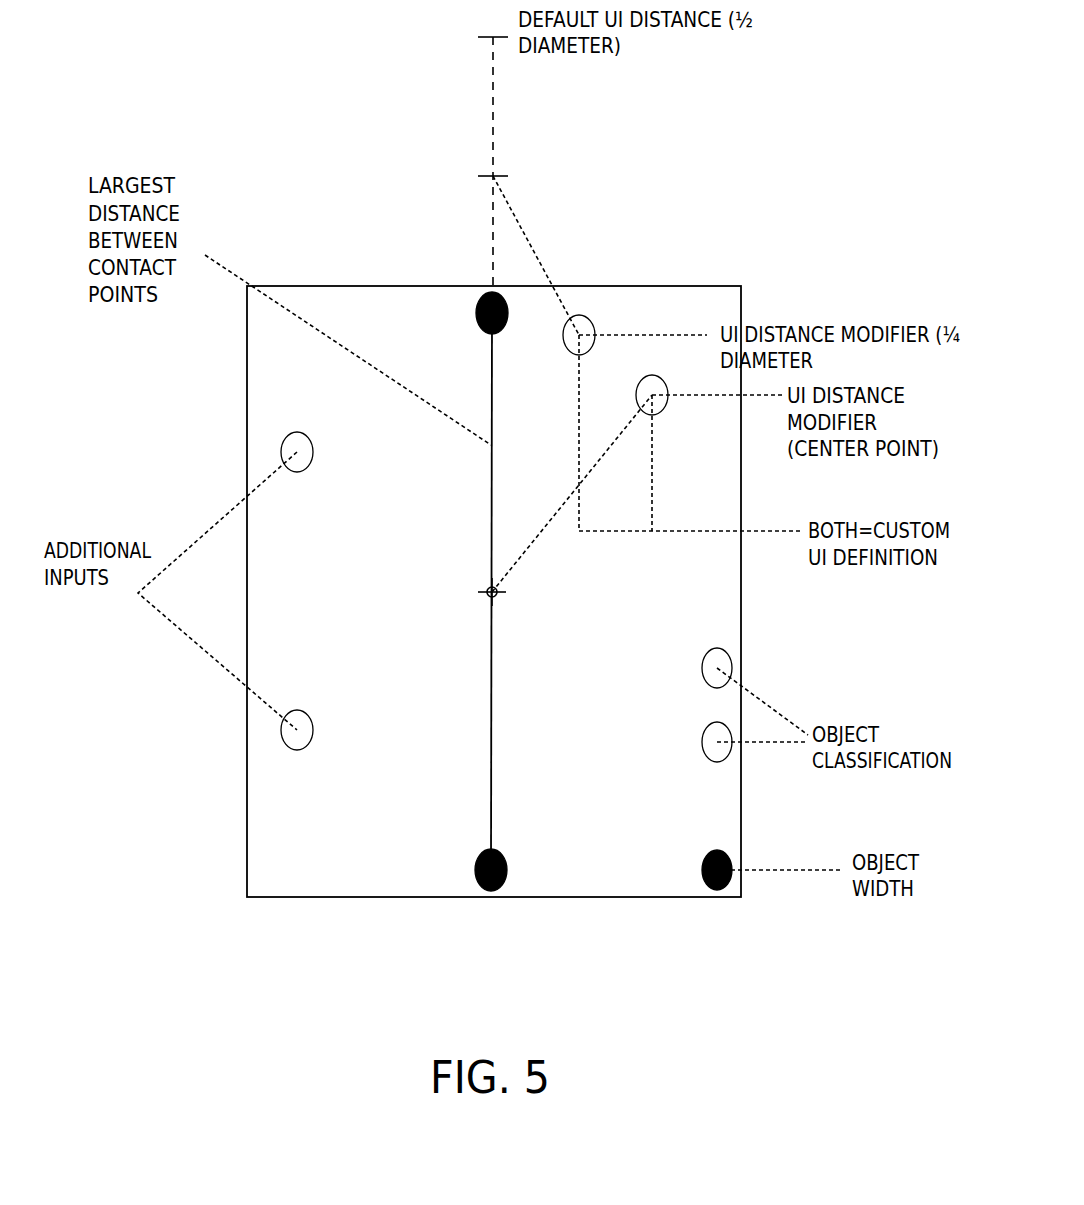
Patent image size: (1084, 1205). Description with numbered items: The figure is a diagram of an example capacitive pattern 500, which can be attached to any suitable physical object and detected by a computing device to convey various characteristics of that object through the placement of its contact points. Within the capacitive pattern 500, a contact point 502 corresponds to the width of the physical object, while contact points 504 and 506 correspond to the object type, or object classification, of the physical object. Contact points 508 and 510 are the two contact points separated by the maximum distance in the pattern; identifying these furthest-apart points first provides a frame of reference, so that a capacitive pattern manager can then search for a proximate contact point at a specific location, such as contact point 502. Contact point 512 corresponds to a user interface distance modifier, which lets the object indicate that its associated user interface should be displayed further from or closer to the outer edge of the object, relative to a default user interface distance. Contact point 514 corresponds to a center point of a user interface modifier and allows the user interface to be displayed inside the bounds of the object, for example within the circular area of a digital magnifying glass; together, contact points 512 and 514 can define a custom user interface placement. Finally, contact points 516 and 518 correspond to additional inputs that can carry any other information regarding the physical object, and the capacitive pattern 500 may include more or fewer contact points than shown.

The capacitive pattern 500 is at (318, 286).
The contact point 502 is at (722, 852).
The contact point 504 is at (726, 652).
The contact point 506 is at (717, 762).
The contact point 508 is at (480, 324).
The contact point 510 is at (507, 864).
The contact point 512 is at (586, 321).
The contact point 514 is at (657, 415).
The contact point 516 is at (300, 472).
The contact point 518 is at (303, 712).